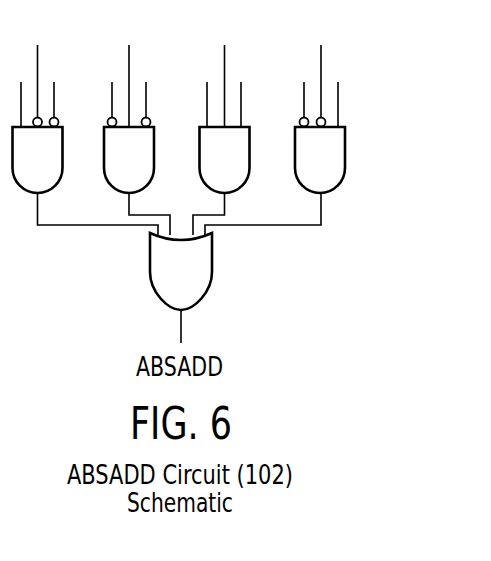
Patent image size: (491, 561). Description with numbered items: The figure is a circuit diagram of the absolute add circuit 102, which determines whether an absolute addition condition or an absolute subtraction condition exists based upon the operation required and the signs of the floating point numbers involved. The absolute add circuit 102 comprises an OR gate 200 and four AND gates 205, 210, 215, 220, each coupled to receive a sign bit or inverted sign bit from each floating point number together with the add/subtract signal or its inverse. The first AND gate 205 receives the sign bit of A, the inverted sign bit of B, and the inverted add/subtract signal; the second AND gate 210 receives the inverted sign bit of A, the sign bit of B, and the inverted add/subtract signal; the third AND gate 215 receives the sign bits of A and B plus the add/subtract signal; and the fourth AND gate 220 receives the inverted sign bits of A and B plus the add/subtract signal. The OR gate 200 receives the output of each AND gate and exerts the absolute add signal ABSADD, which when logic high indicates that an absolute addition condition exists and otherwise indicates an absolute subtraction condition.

The absolute add circuit 102 is at (322, 272).
The OR gate 200 is at (200, 276).
The first AND gate 205 is at (53, 168).
The second AND gate 210 is at (147, 168).
The third AND gate 215 is at (242, 168).
The fourth AND gate 220 is at (340, 168).